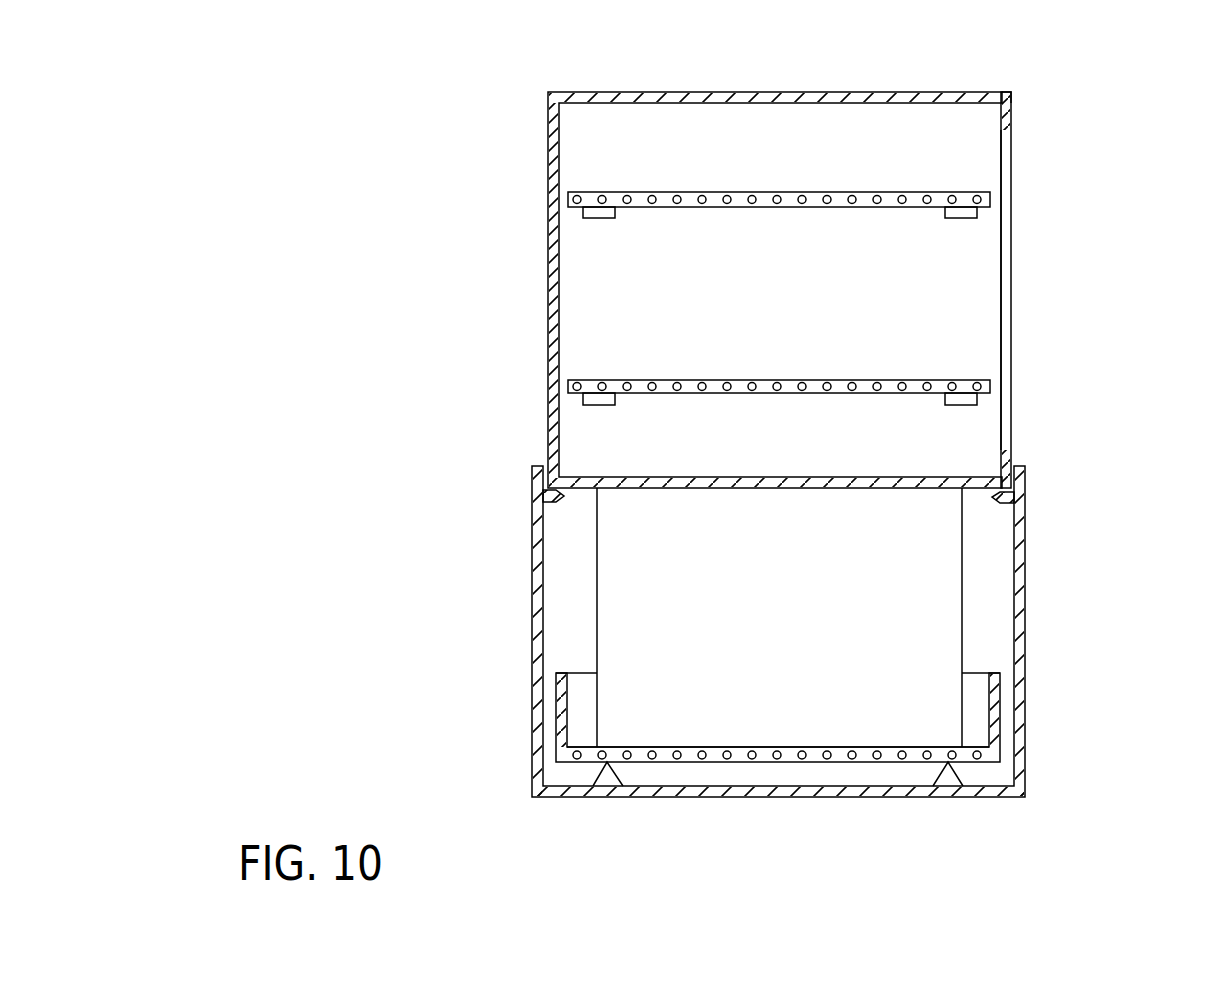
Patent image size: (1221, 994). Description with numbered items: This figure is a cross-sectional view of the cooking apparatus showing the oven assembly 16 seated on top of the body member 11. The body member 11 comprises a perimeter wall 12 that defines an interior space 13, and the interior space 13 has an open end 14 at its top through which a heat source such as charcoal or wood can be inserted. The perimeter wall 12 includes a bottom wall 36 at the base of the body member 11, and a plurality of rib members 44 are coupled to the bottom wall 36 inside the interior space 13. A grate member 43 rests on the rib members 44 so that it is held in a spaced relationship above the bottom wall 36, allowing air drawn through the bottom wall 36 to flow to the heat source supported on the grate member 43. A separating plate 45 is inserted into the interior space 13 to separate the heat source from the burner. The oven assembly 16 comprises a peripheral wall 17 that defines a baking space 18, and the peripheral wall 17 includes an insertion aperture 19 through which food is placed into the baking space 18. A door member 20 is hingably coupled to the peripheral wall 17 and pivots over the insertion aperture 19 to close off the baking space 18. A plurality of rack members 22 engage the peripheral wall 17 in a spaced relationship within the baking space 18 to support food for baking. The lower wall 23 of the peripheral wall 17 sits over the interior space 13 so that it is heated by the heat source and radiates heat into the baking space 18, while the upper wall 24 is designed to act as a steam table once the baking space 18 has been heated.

The body member 11 is at (778, 670).
The perimeter wall 12 is at (1022, 607).
The interior space 13 is at (580, 643).
The open end 14 is at (578, 492).
The oven assembly 16 is at (878, 251).
The peripheral wall 17 is at (1008, 92).
The baking space 18 is at (678, 157).
The insertion aperture 19 is at (1003, 128).
The door member 20 is at (1003, 177).
The rack members 22 is at (749, 196).
The lower wall 23 is at (900, 483).
The upper wall 24 is at (888, 94).
The bottom wall 36 is at (677, 793).
The grate member 43 is at (928, 760).
The rib members 44 is at (603, 777).
The separating plate 45 is at (849, 774).